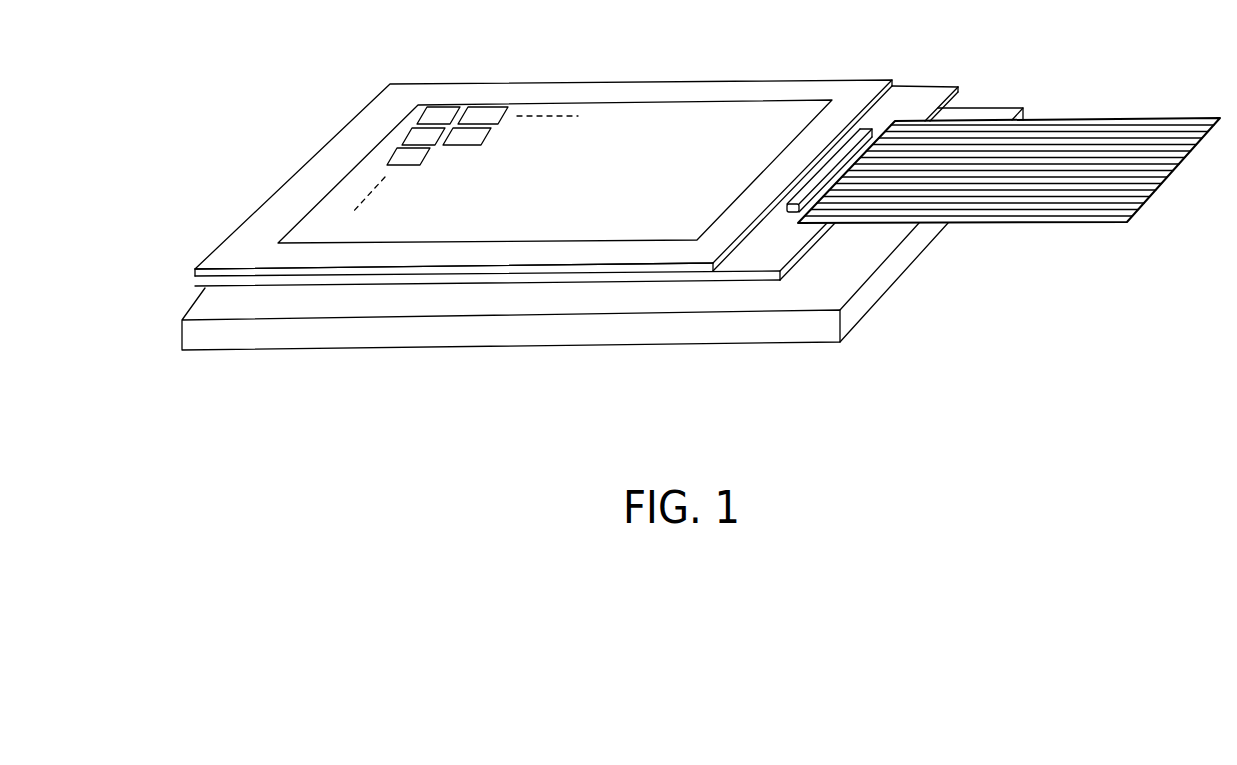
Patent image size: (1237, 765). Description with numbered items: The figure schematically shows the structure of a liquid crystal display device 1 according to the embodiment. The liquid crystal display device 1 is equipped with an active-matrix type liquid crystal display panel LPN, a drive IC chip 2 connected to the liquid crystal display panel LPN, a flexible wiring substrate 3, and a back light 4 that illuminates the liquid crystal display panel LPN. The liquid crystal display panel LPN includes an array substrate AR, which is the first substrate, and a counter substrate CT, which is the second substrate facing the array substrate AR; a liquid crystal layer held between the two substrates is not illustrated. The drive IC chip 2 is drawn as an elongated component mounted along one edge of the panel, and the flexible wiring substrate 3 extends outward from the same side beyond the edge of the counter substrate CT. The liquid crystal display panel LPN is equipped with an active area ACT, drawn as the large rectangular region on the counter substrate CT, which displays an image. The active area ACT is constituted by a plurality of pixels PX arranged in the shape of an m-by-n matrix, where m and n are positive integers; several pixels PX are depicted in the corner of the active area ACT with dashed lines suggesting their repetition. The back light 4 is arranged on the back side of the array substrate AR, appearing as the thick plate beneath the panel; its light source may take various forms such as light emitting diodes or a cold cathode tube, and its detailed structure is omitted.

The liquid crystal display device 1 is at (701, 205).
The drive IC chip 2 is at (858, 122).
The flexible wiring substrate 3 is at (1157, 118).
The back light 4 is at (203, 341).
The pixel PX is at (447, 107).
The active area ACT is at (555, 218).
The counter substrate CT is at (543, 218).
The array substrate AR is at (576, 238).
The liquid crystal display panel LPN is at (750, 283).